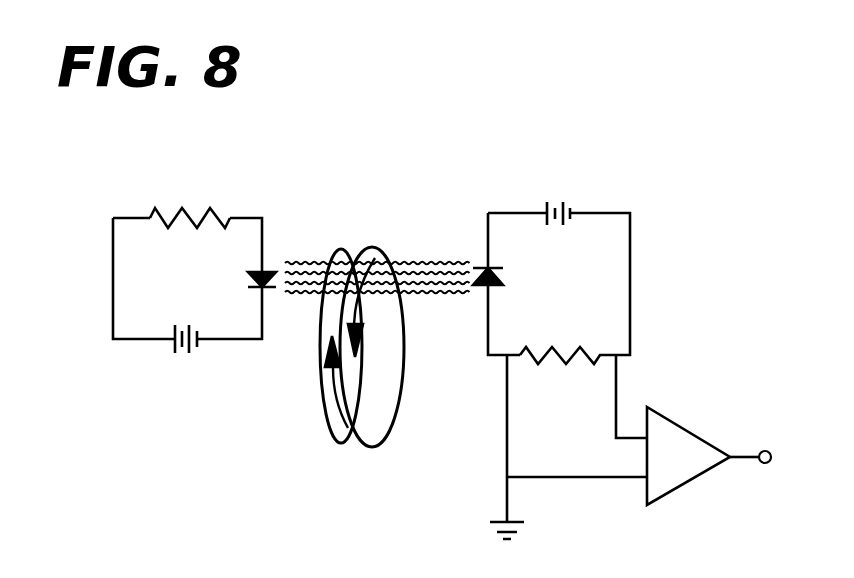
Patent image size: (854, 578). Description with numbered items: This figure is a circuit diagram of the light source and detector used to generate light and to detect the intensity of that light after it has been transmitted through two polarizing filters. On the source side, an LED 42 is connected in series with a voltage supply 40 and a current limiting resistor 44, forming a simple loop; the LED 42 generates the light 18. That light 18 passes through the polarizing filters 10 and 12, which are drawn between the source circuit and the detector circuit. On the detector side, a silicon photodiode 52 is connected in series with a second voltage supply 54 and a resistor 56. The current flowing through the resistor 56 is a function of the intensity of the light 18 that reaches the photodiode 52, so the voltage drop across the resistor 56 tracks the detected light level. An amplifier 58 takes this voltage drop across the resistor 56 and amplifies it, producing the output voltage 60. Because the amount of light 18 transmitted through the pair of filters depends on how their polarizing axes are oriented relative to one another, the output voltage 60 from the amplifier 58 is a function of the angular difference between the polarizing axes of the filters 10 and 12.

The polarizing filter 10 is at (390, 387).
The polarizing filter 12 is at (323, 393).
The light 18 is at (300, 260).
The voltage supply 40 is at (186, 358).
The LED 42 is at (246, 281).
The current limiting resistor 44 is at (190, 206).
The silicon photodiode 52 is at (509, 285).
The voltage supply 54 is at (557, 197).
The resistor 56 is at (561, 372).
The amplifier 58 is at (688, 456).
The output voltage 60 is at (754, 444).